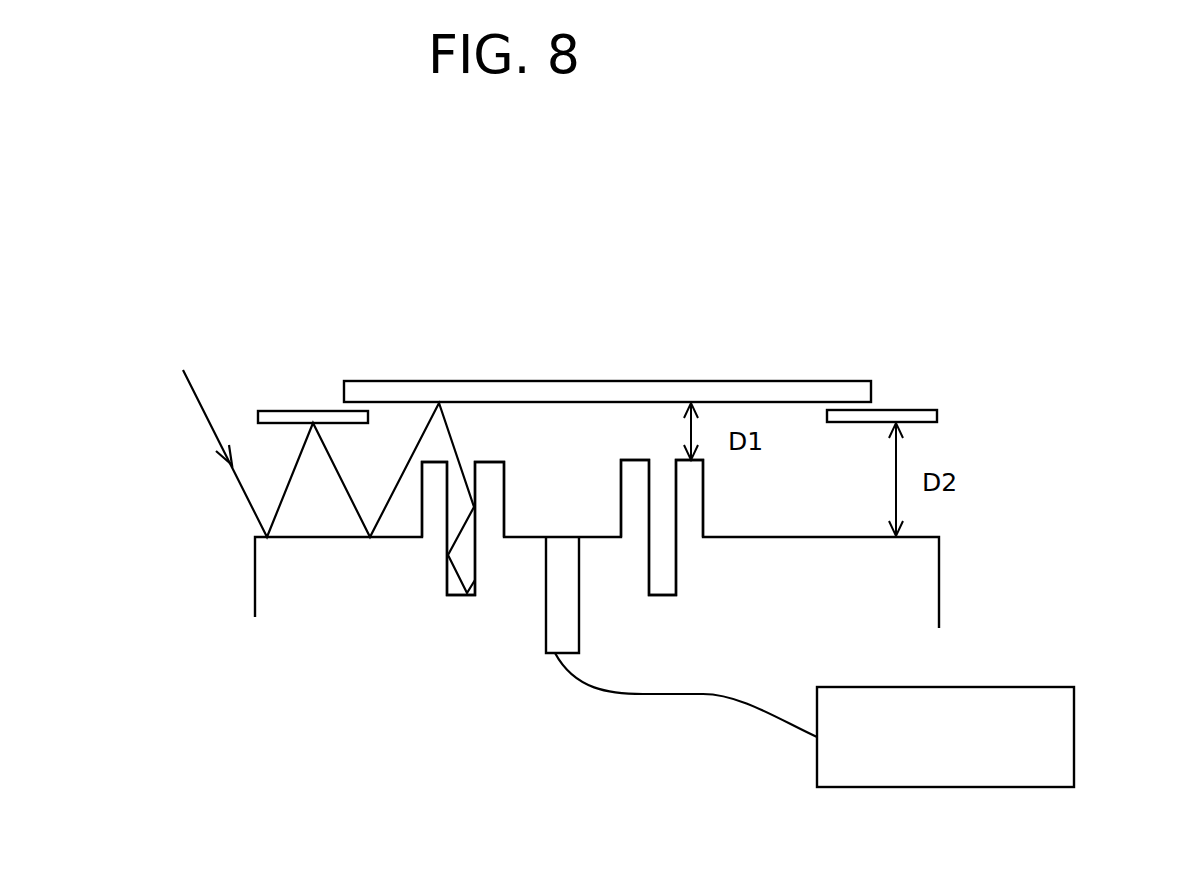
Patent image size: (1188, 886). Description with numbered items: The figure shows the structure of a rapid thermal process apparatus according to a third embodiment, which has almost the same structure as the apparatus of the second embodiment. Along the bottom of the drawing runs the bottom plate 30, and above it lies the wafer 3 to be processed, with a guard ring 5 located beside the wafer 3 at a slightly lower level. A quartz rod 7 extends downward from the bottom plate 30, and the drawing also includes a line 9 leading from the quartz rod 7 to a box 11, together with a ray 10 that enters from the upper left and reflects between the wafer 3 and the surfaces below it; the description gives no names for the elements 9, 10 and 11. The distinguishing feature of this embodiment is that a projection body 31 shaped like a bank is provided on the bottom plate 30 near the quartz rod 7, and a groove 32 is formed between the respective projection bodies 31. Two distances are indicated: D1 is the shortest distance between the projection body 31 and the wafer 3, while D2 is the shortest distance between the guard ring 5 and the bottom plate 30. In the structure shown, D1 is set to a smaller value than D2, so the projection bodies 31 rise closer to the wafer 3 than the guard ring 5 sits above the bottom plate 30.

The wafer 3 is at (871, 382).
The guard ring 5 is at (937, 414).
The quartz rod 7 is at (546, 652).
The lead wire 9 is at (643, 694).
The light beam 10 is at (203, 410).
The measuring unit 11 is at (1074, 763).
The bottom plate 30 is at (939, 580).
The projection body 31 is at (505, 484).
The groove 32 is at (448, 556).